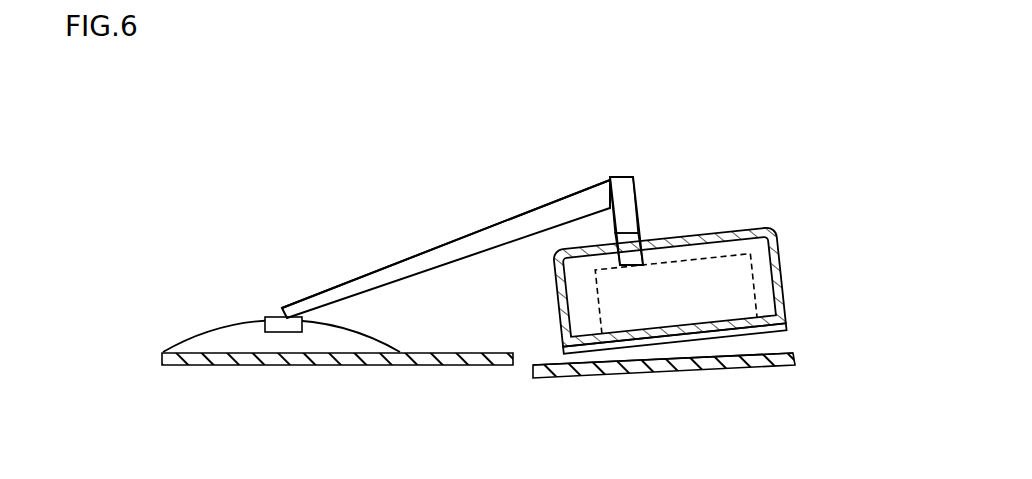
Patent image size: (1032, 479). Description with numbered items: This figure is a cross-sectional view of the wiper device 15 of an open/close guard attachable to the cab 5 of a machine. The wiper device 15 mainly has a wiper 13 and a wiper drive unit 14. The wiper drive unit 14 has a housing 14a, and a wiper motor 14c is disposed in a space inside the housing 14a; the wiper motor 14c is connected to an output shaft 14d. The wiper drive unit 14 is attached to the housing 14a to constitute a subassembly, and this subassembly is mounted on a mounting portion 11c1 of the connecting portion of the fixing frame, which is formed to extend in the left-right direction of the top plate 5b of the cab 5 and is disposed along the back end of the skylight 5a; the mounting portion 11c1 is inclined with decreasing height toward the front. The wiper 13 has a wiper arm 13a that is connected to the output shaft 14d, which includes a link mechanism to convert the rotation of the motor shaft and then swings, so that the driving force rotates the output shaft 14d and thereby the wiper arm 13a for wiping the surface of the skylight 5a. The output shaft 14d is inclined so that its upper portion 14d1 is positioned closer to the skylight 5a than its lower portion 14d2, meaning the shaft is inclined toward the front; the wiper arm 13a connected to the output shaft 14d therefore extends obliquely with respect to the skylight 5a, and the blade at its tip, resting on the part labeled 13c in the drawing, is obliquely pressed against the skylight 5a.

The cab 5 is at (613, 370).
The skylight 5a is at (423, 361).
The top plate 5b is at (736, 368).
The mounting portion 11c1 is at (675, 338).
The wiper 13 is at (513, 225).
The wiper arm 13a is at (440, 248).
The base contact portion 13c is at (208, 340).
The wiper drive unit 14 is at (710, 261).
The housing 14a is at (669, 287).
The wiper motor 14c is at (676, 294).
The output shaft 14d is at (640, 187).
The upper portion of output shaft 14d1 is at (622, 183).
The lower portion of output shaft 14d2 is at (632, 260).
The wiper device 15 is at (786, 110).